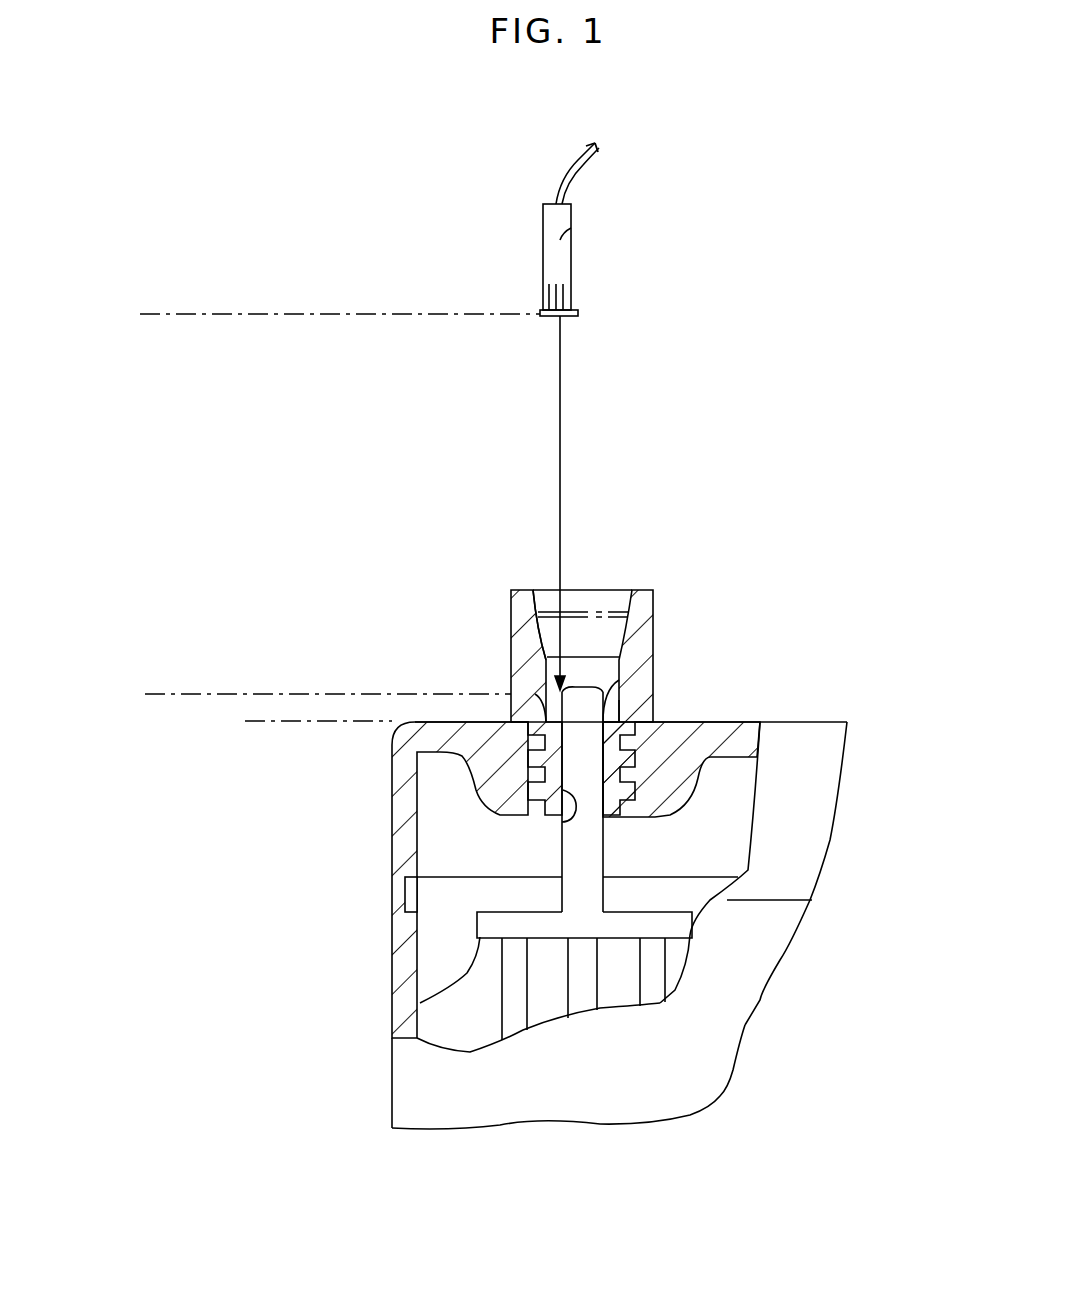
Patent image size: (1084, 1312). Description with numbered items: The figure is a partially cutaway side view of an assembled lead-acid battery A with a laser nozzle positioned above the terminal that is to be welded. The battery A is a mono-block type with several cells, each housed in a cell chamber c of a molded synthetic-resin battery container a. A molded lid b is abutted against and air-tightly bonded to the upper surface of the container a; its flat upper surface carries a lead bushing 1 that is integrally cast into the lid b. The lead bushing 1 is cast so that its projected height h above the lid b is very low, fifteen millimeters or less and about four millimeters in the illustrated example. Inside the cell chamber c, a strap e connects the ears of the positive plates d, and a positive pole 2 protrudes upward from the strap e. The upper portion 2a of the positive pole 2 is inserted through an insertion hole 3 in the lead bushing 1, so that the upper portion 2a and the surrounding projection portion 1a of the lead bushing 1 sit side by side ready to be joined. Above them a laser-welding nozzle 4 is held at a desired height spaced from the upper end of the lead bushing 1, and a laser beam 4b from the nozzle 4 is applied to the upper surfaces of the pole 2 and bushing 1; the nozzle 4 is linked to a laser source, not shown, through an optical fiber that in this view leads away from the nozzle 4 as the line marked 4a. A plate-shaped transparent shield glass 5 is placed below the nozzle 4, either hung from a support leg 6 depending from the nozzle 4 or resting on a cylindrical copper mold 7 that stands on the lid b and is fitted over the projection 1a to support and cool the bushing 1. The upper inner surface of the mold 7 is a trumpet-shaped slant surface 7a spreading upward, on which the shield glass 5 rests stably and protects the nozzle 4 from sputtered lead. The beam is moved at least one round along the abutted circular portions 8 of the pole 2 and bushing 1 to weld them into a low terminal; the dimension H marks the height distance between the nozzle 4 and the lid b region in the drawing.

The lead bushing 1 is at (660, 722).
The projection portion of the lead bushing 1a is at (545, 703).
The positive pole 2 is at (605, 848).
The upper portion of the positive pole 2a is at (603, 690).
The insertion hole 3 is at (563, 815).
The laser-welding nozzle 4 is at (571, 212).
The sensor cable 4a is at (583, 162).
The laser beam 4b is at (562, 420).
The shield glass 5 is at (615, 612).
The support leg 6 is at (570, 295).
The cylindrical mold 7 is at (513, 628).
The trumpet-shaped slant surface 7a is at (537, 600).
The circular portions 8 is at (640, 665).
The battery container a is at (400, 948).
The lid b is at (745, 722).
The cell chamber c is at (730, 814).
The positive plates d is at (653, 1003).
The strap e is at (420, 1010).
The assembled lead-acid battery A is at (820, 592).
The height H is at (192, 314).
The projected height h is at (307, 625).